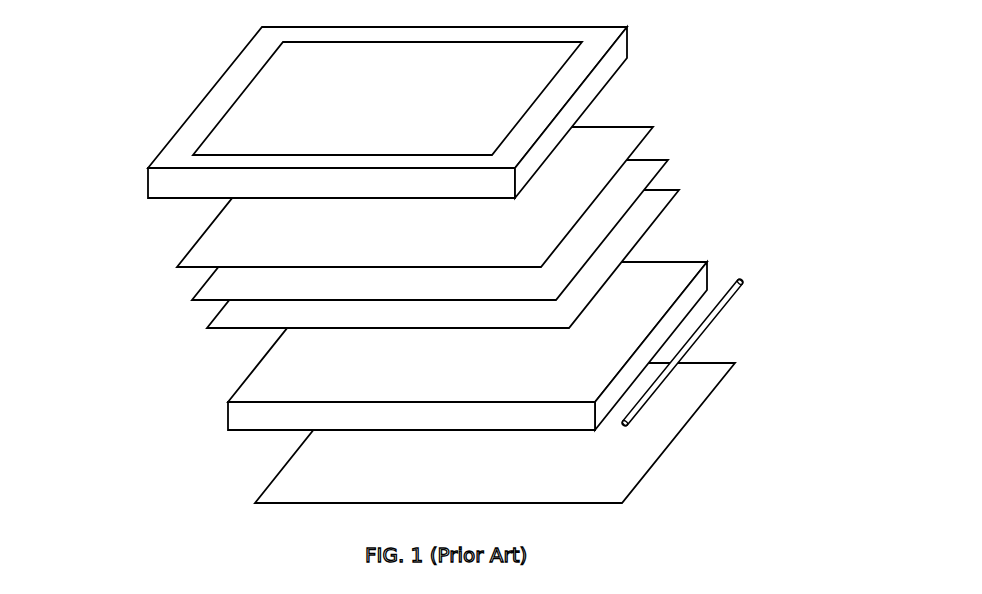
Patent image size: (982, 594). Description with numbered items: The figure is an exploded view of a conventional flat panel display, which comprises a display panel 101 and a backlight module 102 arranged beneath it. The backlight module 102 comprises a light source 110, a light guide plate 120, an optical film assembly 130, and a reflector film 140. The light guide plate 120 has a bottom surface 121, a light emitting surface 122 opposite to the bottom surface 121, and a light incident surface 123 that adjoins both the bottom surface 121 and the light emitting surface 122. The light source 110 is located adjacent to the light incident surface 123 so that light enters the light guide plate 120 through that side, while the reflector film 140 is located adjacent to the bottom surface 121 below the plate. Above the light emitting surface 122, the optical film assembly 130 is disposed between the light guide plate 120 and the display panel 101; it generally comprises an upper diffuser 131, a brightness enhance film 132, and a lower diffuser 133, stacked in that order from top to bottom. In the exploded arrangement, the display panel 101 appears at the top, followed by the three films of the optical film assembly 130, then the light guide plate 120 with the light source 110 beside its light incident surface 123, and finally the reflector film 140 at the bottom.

The display panel 101 is at (177, 133).
The backlight module 102 is at (437, 210).
The light source 110 is at (717, 312).
The light guide plate 120 is at (497, 335).
The bottom surface 121 is at (277, 433).
The light emitting surface 122 is at (278, 383).
The light incident surface 123 is at (708, 277).
The optical film assembly 130 is at (512, 210).
The upper diffuser 131 is at (620, 143).
The brightness enhance film 132 is at (637, 172).
The lower diffuser 133 is at (655, 200).
The reflector film 140 is at (700, 380).